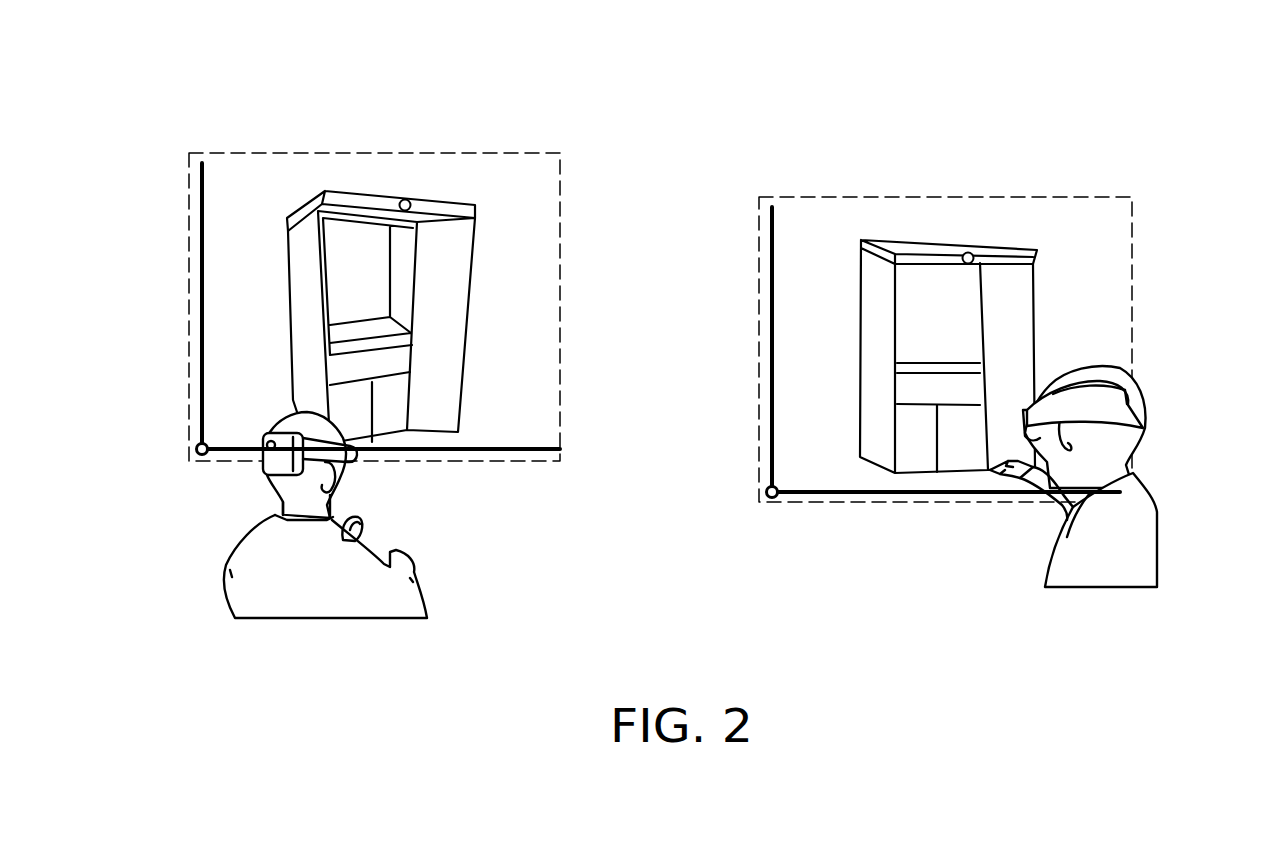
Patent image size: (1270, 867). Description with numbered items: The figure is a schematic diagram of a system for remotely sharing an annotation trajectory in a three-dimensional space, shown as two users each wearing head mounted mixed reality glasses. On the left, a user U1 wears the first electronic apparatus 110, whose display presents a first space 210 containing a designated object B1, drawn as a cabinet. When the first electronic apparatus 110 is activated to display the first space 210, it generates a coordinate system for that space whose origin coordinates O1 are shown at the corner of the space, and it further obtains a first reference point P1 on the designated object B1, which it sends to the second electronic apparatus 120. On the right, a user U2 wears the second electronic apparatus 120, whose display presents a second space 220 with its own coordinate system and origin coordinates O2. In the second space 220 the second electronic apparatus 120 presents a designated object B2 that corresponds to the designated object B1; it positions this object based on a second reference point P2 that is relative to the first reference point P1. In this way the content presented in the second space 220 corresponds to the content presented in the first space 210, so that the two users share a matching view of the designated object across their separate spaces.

The first space 210 is at (528, 152).
The second space 220 is at (1100, 195).
The first electronic apparatus 110 is at (358, 458).
The second electronic apparatus 120 is at (1110, 395).
The first reference point P1 is at (405, 199).
The designated object B1 is at (447, 207).
The origin coordinates O1 is at (195, 445).
The user U1 is at (305, 588).
The second reference point P2 is at (968, 252).
The designated object B2 is at (1002, 240).
The origin coordinates O2 is at (765, 487).
The user U2 is at (1097, 567).